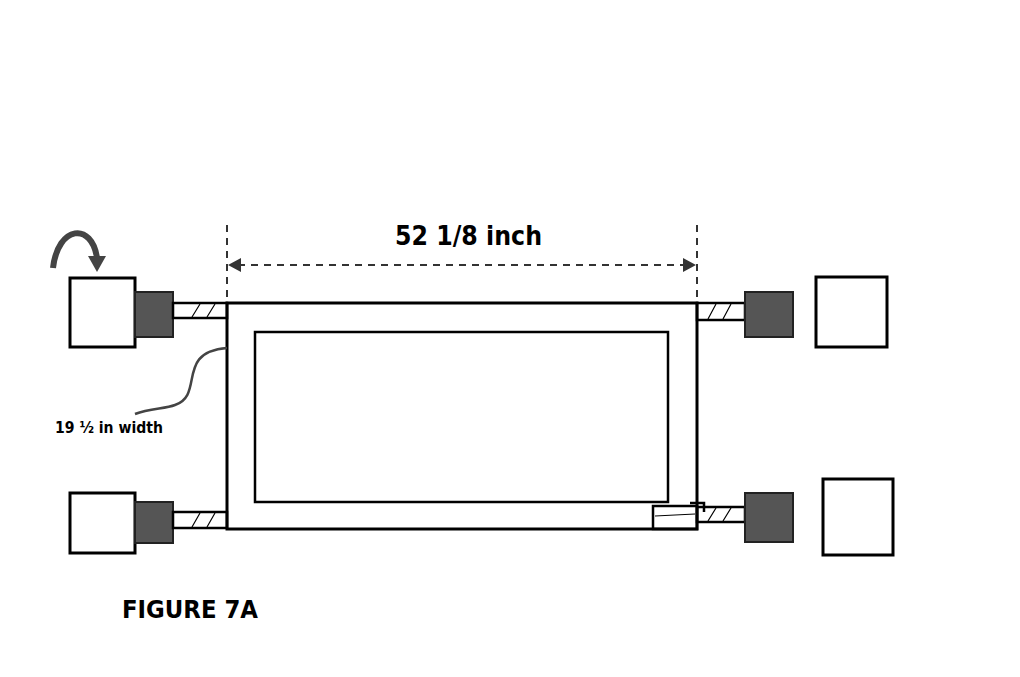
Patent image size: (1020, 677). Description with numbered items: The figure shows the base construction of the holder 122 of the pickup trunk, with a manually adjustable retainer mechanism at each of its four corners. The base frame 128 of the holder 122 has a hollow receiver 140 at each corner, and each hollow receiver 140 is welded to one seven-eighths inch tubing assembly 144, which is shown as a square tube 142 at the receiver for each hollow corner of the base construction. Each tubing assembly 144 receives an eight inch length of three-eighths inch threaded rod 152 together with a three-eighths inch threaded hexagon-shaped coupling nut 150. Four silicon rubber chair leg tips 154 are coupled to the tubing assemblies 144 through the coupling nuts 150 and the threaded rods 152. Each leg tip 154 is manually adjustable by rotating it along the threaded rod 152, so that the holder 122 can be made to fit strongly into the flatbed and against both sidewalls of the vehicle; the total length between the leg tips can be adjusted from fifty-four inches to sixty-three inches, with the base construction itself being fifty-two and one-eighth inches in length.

The holder 122 is at (561, 470).
The base frame 128 is at (392, 518).
The hollow receiver 140 is at (660, 522).
The square tube 142 is at (697, 505).
The tubing assembly 144 is at (703, 530).
The threaded hexagon-shaped coupling nut 150 is at (783, 292).
The threaded rod 152 is at (725, 312).
The silicon rubber chair leg tip 154 is at (843, 318).